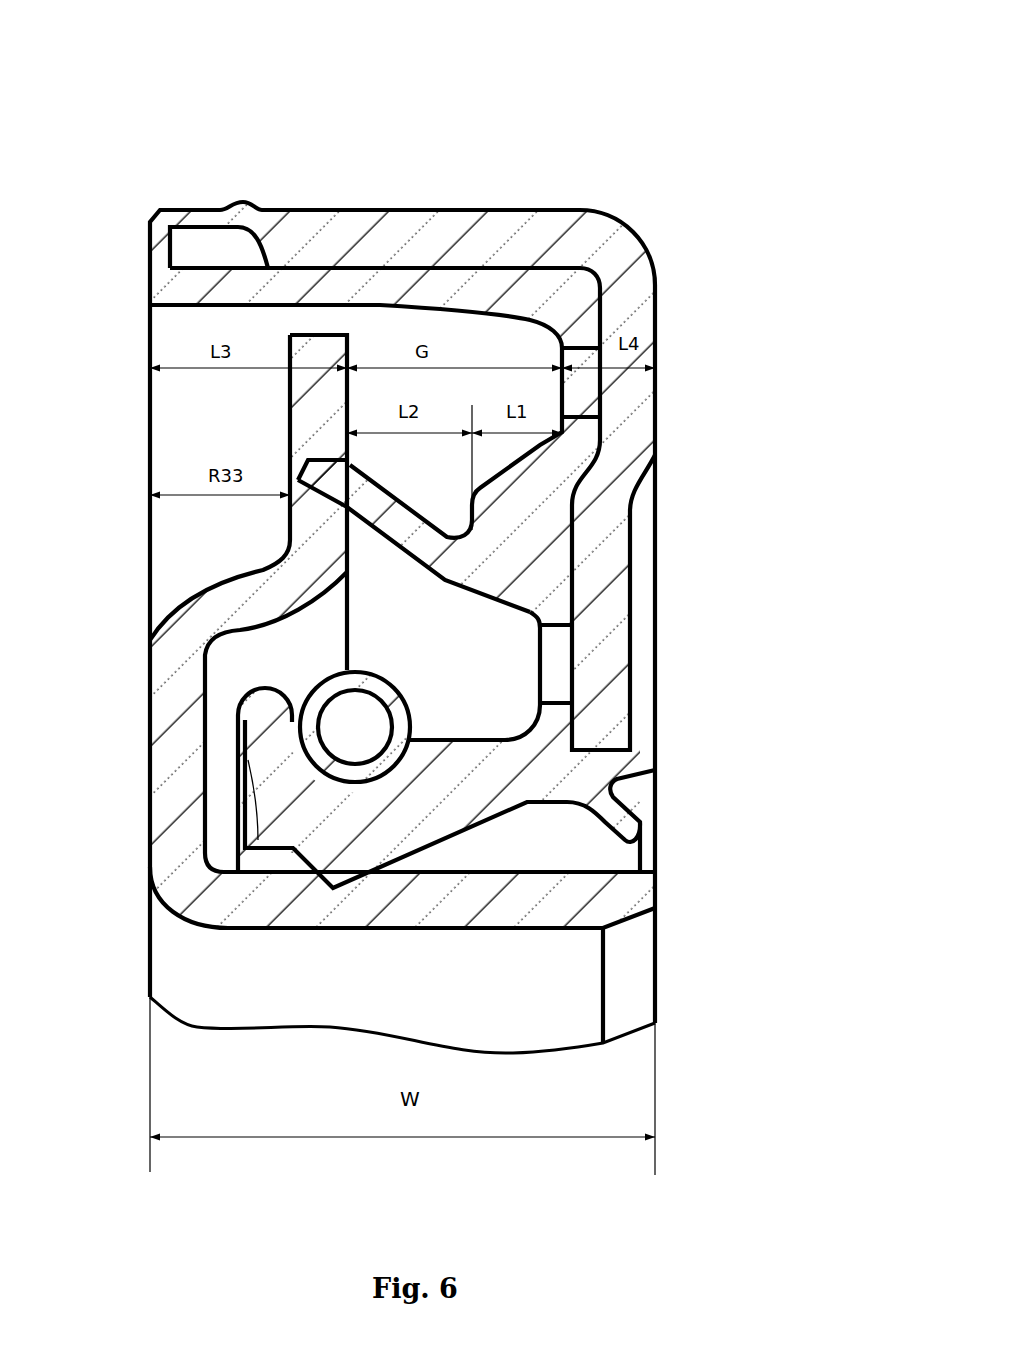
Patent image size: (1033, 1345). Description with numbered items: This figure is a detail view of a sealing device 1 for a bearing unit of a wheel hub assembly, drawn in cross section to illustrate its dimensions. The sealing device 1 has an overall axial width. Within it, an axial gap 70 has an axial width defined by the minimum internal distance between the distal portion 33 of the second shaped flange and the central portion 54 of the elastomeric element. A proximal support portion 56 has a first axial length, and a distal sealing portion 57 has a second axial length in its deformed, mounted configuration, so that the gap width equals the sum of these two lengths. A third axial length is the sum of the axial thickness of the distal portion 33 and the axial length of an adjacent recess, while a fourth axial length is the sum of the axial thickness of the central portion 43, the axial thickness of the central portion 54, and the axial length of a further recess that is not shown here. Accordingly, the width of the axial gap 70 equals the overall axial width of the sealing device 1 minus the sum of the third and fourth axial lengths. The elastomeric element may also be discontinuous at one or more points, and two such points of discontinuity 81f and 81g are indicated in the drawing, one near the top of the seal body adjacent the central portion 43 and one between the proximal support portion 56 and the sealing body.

The sealing device 1 is at (630, 153).
The axial gap 70 is at (392, 340).
The distal portion 33 is at (298, 402).
The distal sealing portion 57 is at (380, 528).
The point of discontinuity 81f is at (592, 402).
The central portion 43 is at (622, 459).
The central portion 54 is at (654, 500).
The proximal support portion 56 is at (540, 548).
The point of discontinuity 81g is at (557, 677).